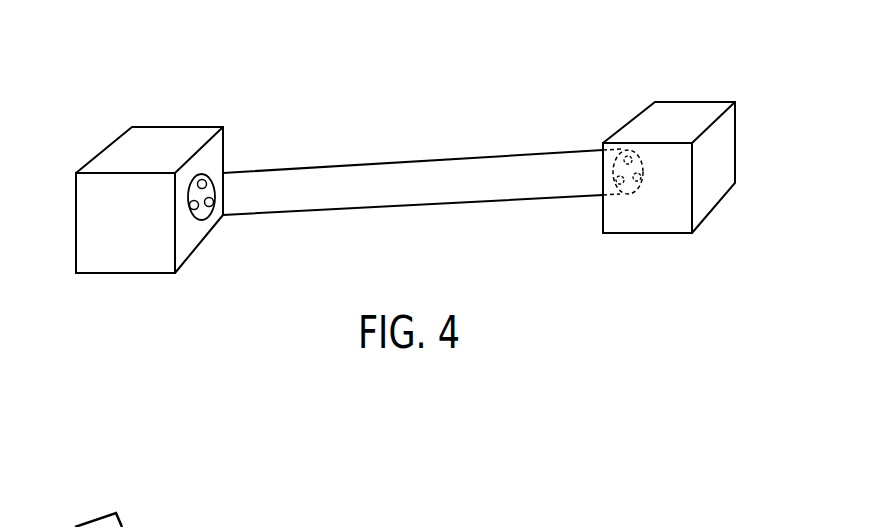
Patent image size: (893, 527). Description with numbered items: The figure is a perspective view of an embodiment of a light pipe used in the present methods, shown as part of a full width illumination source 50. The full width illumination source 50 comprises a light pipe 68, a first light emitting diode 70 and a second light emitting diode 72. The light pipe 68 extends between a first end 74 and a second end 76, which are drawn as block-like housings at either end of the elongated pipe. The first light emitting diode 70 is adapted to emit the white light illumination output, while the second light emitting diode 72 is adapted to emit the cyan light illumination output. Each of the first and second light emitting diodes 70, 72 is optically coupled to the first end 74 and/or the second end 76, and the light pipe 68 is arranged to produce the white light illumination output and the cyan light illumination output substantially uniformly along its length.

The full width illumination source 50 is at (485, 88).
The light pipe 68 is at (290, 215).
The first light emitting diode 70 is at (207, 191).
The second light emitting diode 72 is at (210, 212).
The first end 74 is at (234, 110).
The second end 76 is at (585, 125).